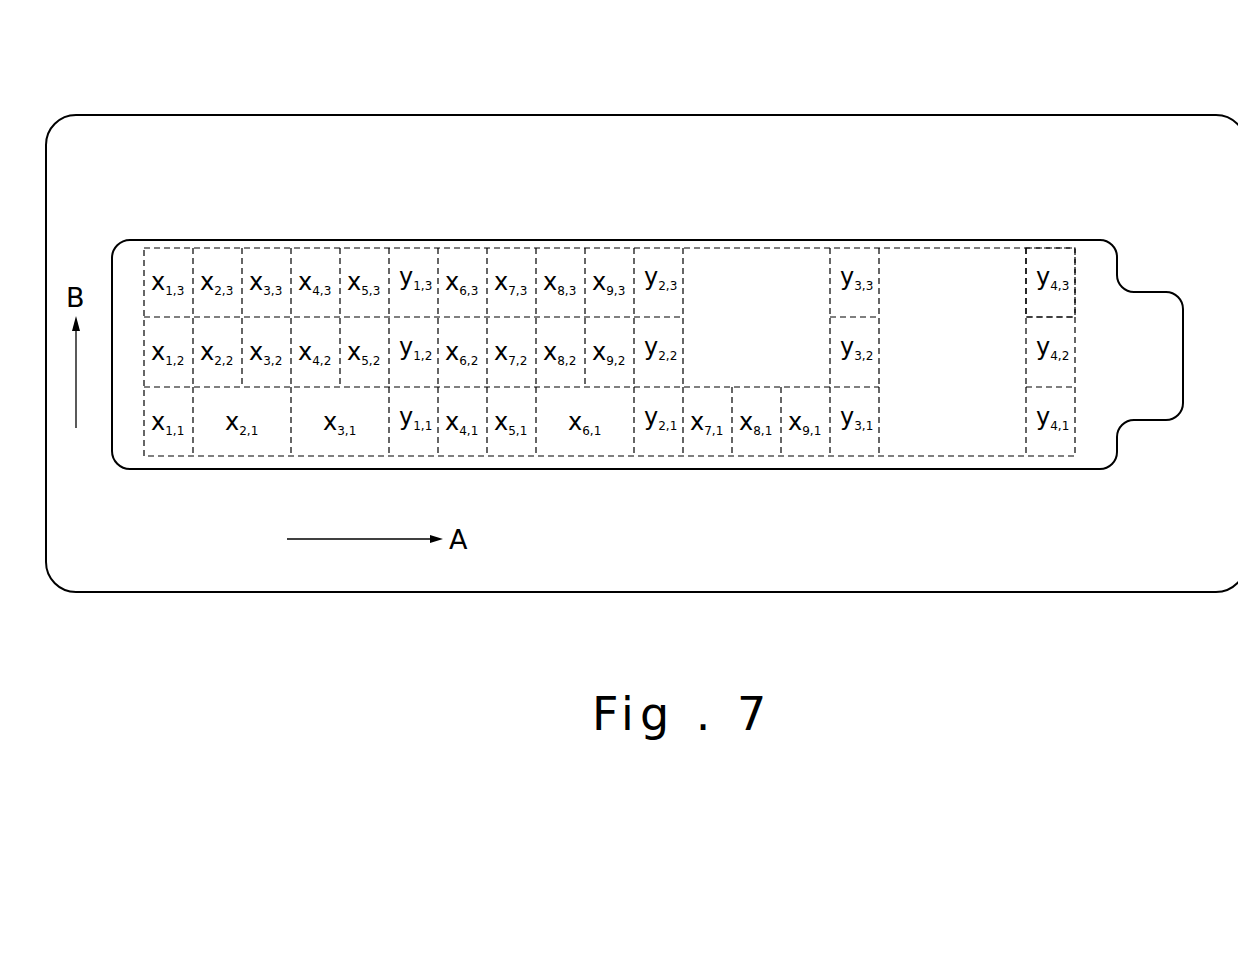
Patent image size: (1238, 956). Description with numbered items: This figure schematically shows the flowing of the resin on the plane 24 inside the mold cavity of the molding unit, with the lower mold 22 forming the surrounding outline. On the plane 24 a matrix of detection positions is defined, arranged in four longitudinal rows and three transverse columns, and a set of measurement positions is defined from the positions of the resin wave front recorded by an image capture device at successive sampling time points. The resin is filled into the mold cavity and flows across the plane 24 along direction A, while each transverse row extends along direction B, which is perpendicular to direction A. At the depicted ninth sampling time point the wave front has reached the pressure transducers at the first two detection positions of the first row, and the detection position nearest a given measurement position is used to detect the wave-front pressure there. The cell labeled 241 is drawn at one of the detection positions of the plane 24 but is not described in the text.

The lower mold 22 is at (236, 160).
The plane 24 is at (126, 260).
The key cell 241 is at (1080, 280).